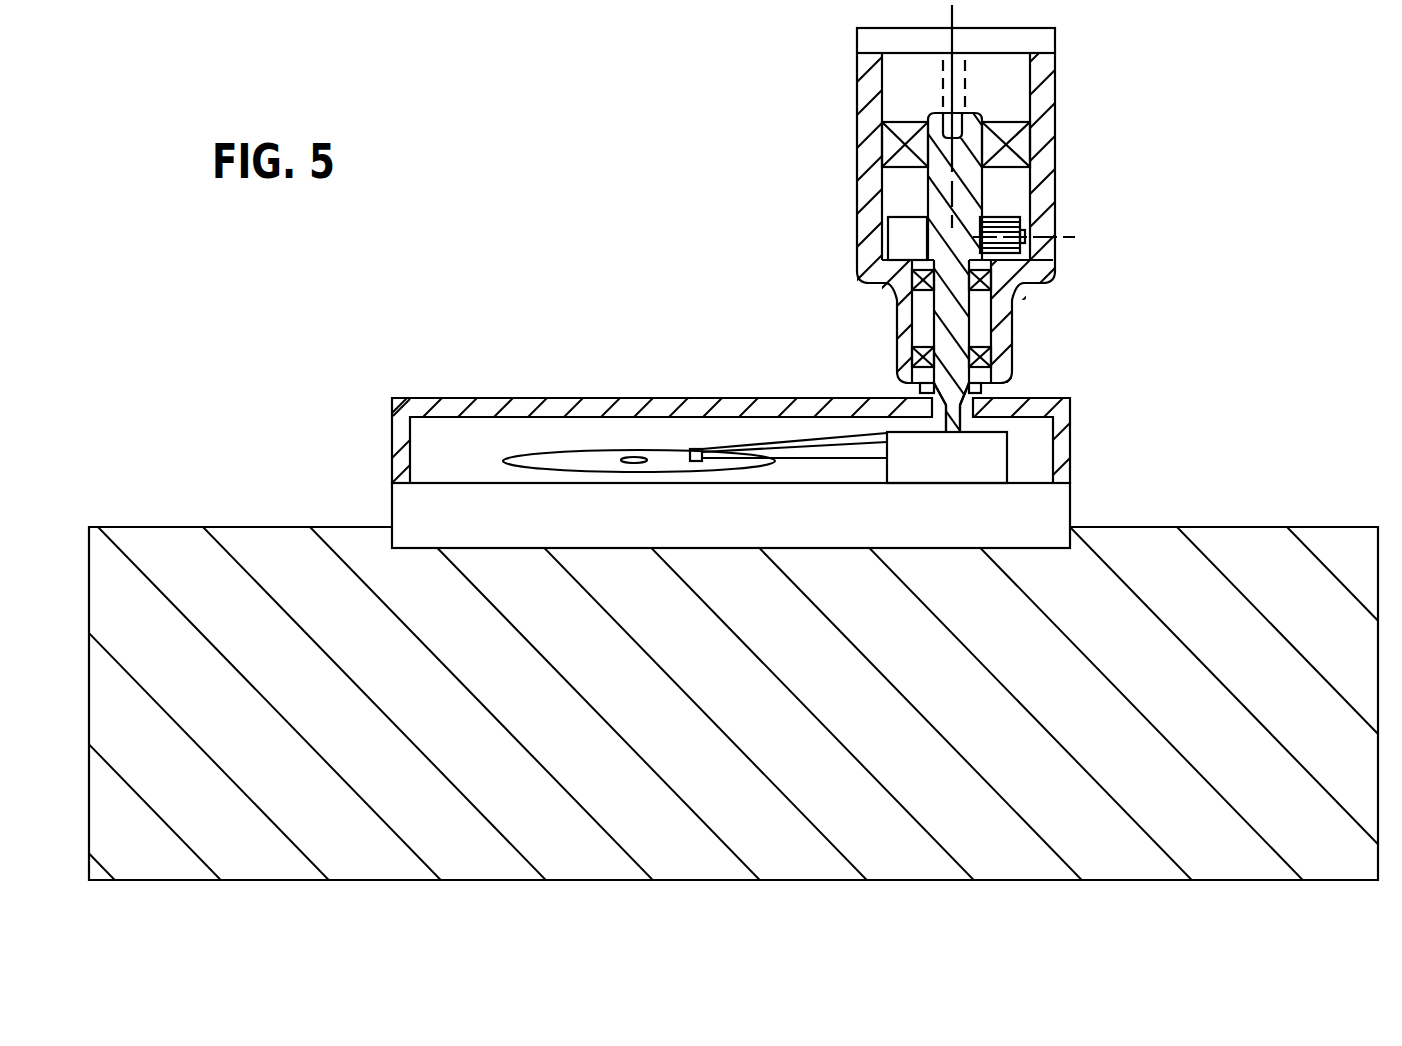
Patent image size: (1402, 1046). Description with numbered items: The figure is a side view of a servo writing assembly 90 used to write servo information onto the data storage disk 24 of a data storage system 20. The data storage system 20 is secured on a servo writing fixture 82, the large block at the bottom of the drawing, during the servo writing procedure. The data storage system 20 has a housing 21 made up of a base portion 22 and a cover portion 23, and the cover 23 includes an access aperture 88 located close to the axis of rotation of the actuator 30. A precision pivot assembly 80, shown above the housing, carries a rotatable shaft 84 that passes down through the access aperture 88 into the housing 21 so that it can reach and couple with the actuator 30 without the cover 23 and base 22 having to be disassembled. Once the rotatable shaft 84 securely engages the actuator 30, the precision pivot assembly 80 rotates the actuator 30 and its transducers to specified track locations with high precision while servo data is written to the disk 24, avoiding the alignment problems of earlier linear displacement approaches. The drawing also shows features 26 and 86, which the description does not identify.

The data storage system 20 is at (721, 390).
The housing 21 is at (392, 478).
The base portion 22 is at (432, 528).
The cover portion 23 is at (438, 398).
The data storage disk 24 is at (577, 458).
The spindle hub 26 is at (638, 457).
The actuator 30 is at (995, 461).
The precision pivot assembly 80 is at (857, 112).
The servo writing fixture 82 is at (612, 862).
The rotatable shaft 84 is at (990, 119).
The bearings 86 is at (1035, 154).
The access aperture 88 is at (977, 398).
The servo writing assembly 90 is at (926, 220).